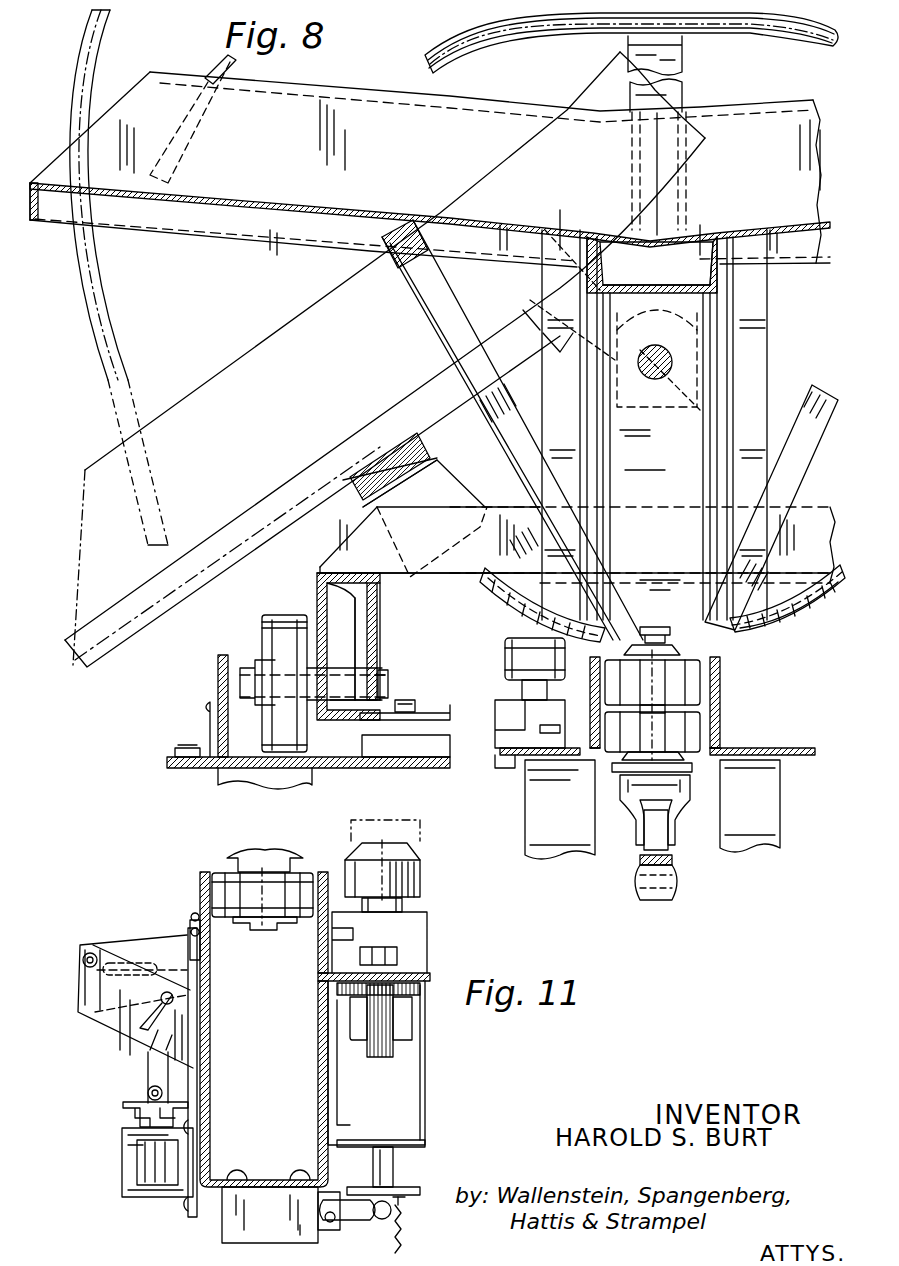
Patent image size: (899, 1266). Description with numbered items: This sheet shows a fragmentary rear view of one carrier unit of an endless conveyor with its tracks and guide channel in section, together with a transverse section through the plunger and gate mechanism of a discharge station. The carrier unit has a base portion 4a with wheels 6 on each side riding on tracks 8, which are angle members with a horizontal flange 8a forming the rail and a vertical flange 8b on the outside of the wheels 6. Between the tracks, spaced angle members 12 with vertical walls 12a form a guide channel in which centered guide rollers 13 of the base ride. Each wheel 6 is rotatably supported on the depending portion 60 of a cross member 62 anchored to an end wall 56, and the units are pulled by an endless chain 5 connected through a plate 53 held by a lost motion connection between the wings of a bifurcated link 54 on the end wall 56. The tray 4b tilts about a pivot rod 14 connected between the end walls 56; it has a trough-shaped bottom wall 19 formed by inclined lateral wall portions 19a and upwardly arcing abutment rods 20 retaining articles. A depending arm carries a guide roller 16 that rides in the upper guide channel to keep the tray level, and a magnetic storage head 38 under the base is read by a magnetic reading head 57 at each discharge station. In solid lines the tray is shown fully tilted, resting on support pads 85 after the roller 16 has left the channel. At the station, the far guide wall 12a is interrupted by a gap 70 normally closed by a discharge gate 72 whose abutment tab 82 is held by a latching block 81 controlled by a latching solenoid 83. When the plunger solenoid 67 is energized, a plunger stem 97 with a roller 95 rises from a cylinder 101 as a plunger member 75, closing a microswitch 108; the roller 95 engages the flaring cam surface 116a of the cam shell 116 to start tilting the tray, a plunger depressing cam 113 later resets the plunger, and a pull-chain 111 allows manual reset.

In FIG. 8, the base portion 4a is at (483, 502).
In FIG. 8, the carrier body or tray 4b is at (62, 162).
In FIG. 8, the endless chain 5 is at (688, 843).
In FIG. 8, the wheels 6 is at (278, 620).
In FIG. 8, the tracks or rails 8 is at (205, 768).
In FIG. 8, the horizontal flange 8a is at (235, 772).
In FIG. 8, the vertical flange 8b is at (218, 692).
In FIG. 8, the angle members 12 is at (772, 750).
In FIG. 8, the vertical flanges or guide walls 12a is at (722, 715).
In FIG. 8, the guide rollers 13 is at (705, 735).
In FIG. 8, the pivot rod 14 is at (657, 378).
In FIG. 8, the guide roller or wheel 16 is at (716, 682).
In FIG. 8, the trough-shaped bottom wall 19 is at (655, 240).
In FIG. 8, the inclined lateral wall portions 19a is at (258, 198).
In FIG. 8, the abutment rods 20 is at (210, 62).
In FIG. 8, the magnetic storage head 38 is at (420, 728).
In FIG. 8, the plate 53 is at (652, 845).
In FIG. 8, the bifurcated link 54 is at (632, 808).
In FIG. 8, the end wall 56 is at (742, 320).
In FIG. 8, the magnetic reading head 57 is at (445, 757).
In FIG. 8, the depending portion 60 is at (318, 585).
In FIG. 8, the cross member 62 is at (795, 508).
In FIG. 11, the plunger solenoid 67 is at (383, 1058).
In FIG. 11, the gap 70 is at (210, 944).
In FIG. 11, the discharge gate 72 is at (200, 900).
In FIG. 8, the plunger member 75 is at (500, 668).
In FIG. 11, the plunger member 75 is at (424, 890).
In FIG. 11, the latching plate or block 81 is at (140, 938).
In FIG. 11, the abutment tab 82 is at (188, 932).
In FIG. 11, the latching solenoid 83 is at (138, 1165).
In FIG. 8, the support pads 85 is at (362, 458).
In FIG. 8, the roller 95 is at (505, 683).
In FIG. 11, the roller 95 is at (353, 870).
In FIG. 11, the plunger stem 97 is at (386, 912).
In FIG. 11, the cylinder 101 is at (430, 1112).
In FIG. 11, the microswitch 108 is at (353, 1223).
In FIG. 11, the pull-chain 111 is at (404, 1242).
In FIG. 8, the plunger depressing cam 113 is at (500, 620).
In FIG. 8, the cam shell 116 is at (494, 602).
In FIG. 8, the cam surface 116a is at (492, 588).